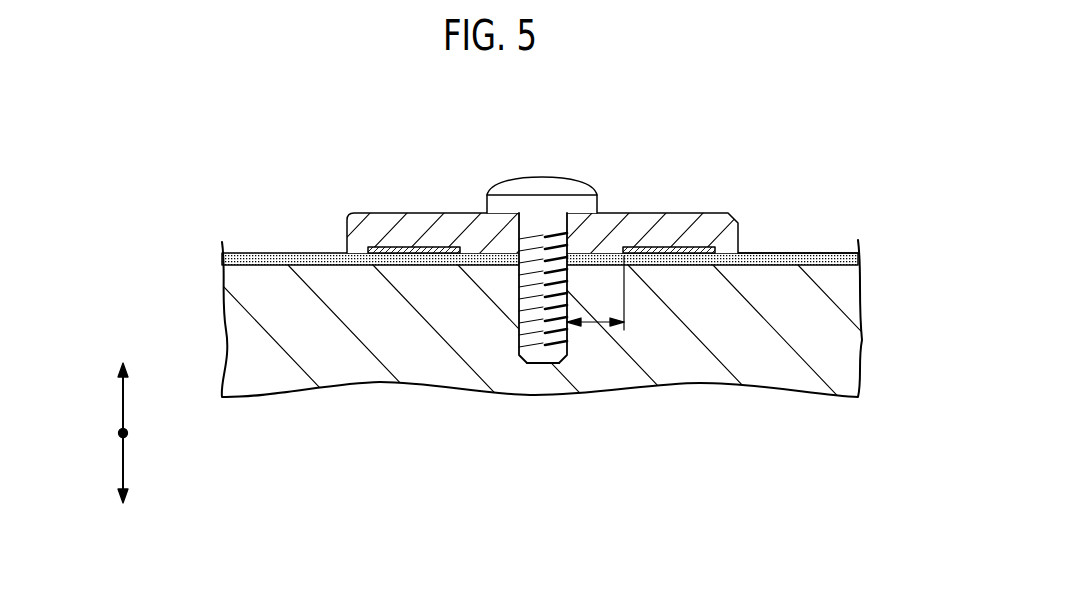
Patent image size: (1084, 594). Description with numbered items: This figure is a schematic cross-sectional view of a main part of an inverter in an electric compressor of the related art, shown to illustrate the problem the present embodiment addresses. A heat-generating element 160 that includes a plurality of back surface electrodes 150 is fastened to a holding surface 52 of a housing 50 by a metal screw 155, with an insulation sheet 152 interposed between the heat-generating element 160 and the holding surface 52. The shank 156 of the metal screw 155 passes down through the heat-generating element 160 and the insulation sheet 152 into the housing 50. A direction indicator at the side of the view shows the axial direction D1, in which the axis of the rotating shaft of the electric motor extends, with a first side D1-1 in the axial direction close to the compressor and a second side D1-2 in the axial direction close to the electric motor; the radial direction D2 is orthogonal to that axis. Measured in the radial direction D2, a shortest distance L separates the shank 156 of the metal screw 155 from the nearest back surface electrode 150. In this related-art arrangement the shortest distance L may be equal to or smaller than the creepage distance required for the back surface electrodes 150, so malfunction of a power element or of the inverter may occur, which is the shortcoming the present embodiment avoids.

The housing 50 is at (825, 323).
The holding surface 52 is at (828, 254).
The back surface electrode 150 is at (418, 246).
The insulation sheet 152 is at (784, 256).
The metal screw 155 is at (540, 177).
The shank 156 is at (567, 337).
The heat-generating element 160 is at (618, 201).
The shortest distance L is at (593, 323).
The axial direction D1 is at (122, 399).
The radial direction D2 is at (125, 433).
The first side in the axial direction D1-1 is at (121, 503).
The second side in the axial direction D1-2 is at (121, 365).